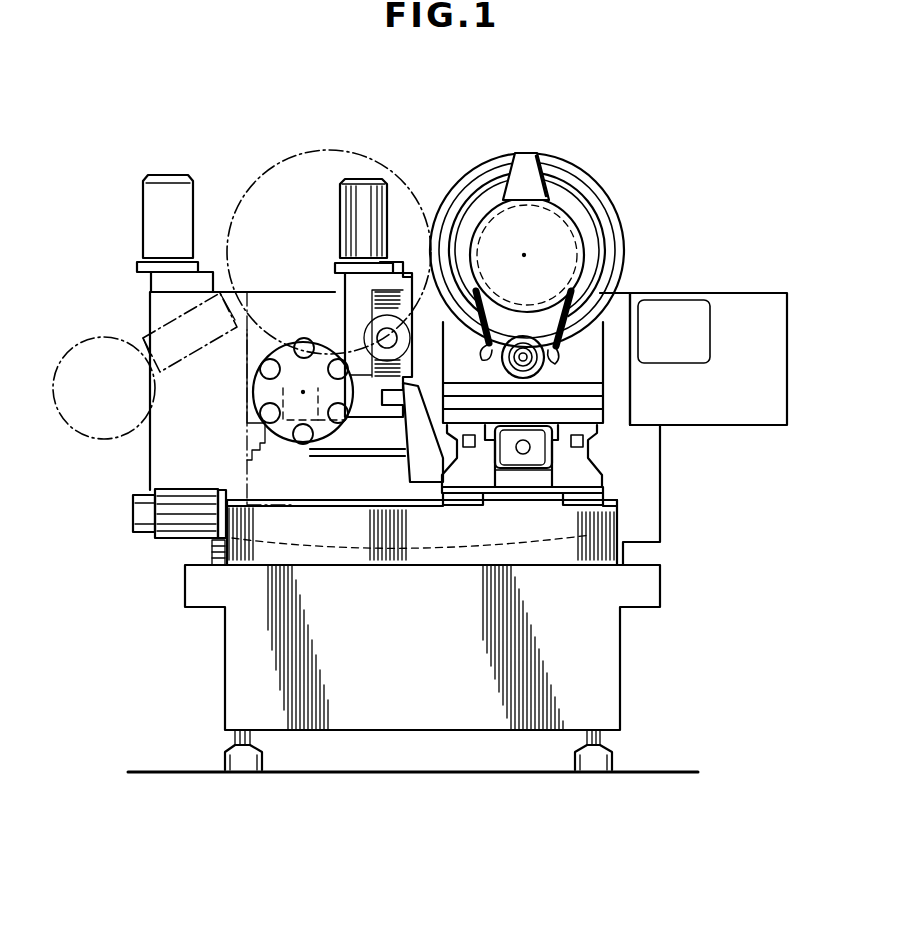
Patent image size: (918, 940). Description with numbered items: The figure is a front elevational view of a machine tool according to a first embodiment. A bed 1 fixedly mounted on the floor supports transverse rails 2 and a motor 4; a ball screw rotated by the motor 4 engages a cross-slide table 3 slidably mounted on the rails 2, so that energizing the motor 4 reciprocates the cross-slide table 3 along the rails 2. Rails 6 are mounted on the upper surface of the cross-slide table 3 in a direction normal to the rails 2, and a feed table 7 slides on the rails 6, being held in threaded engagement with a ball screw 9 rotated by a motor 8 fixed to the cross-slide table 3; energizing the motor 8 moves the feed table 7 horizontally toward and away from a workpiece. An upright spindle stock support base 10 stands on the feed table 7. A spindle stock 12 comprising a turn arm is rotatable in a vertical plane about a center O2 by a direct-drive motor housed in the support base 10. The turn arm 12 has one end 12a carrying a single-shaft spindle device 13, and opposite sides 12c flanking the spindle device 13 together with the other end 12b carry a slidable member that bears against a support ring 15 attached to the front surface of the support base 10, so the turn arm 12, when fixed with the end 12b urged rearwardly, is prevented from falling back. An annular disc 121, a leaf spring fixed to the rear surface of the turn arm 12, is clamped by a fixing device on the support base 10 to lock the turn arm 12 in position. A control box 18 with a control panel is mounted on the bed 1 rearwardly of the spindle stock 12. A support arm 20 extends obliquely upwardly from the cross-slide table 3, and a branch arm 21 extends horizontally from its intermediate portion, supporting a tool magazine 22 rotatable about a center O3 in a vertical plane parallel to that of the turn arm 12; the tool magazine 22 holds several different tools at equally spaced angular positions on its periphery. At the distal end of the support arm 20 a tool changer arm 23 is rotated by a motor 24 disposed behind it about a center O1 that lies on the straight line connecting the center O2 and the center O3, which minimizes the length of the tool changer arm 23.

The bed 1 is at (612, 678).
The transverse rails 2 is at (340, 505).
The cross-slide table 3 is at (585, 478).
The motor 4 is at (170, 520).
The rails 6 is at (583, 440).
The feed table 7 is at (593, 398).
The motor 8 is at (547, 465).
The ball screw 9 is at (521, 453).
The spindle stock support base 10 is at (612, 340).
The spindle stock 12 is at (523, 223).
The one end 12a is at (547, 362).
The other end 12b is at (525, 160).
The opposite sides 12c is at (485, 345).
The single-shaft spindle device 13 is at (503, 362).
The support ring 15 is at (586, 180).
The control box 18 is at (760, 300).
The support arm 20 is at (427, 465).
The branch arm 21 is at (347, 437).
The tool magazine 22 is at (258, 398).
The tool changer arm 23 is at (373, 300).
The motor 24 is at (357, 198).
The annular disc 121 is at (483, 190).
The center O1 is at (384, 340).
The center O2 is at (526, 242).
The center O3 is at (304, 382).